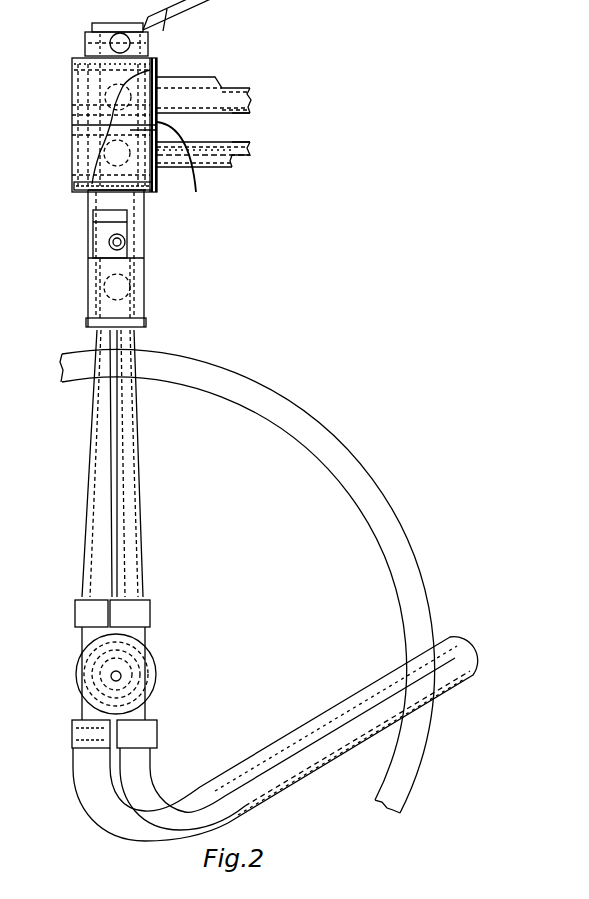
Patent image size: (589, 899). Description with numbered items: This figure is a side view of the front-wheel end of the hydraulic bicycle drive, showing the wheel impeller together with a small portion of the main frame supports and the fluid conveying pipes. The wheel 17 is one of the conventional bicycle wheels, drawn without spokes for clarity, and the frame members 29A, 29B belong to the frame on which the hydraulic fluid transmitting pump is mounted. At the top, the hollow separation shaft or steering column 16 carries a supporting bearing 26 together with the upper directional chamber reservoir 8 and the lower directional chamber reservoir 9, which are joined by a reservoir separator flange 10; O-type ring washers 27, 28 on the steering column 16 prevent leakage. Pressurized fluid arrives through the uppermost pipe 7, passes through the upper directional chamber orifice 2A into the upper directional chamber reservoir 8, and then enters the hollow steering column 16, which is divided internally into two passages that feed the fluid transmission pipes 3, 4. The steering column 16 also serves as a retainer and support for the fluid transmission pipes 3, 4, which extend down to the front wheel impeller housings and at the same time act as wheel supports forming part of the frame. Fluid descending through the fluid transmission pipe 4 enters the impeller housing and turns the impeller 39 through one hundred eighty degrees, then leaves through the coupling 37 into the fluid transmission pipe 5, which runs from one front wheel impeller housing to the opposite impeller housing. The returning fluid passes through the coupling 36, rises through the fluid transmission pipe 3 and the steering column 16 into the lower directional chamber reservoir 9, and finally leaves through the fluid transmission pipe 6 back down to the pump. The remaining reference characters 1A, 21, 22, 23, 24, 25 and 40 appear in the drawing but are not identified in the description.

The outer tube 1A is at (233, 148).
The upper directional chamber orifice 2A is at (248, 86).
The fluid transmission pipe 3 is at (86, 528).
The fluid transmission pipe 4 is at (144, 571).
The fluid transmission pipe 5 is at (308, 722).
The fluid transmission pipe 6 is at (248, 137).
The uppermost pipe 7 is at (252, 113).
The upper directional chamber reservoir 8 is at (76, 98).
The lower directional chamber reservoir 9 is at (80, 141).
The reservoir separator flange 10 is at (190, 166).
The steering column 16 is at (88, 228).
The wheel 17 is at (250, 378).
The handle rod 21 is at (125, 32).
The cap 22 is at (92, 40).
The side wall 23 is at (150, 58).
The top plate 24 is at (80, 63).
The bottom flange 25 is at (148, 198).
The supporting bearing 26 is at (78, 192).
The O-type ring washer 27 is at (82, 83).
The O-type ring washer 28 is at (157, 172).
The frame member 29A is at (207, 77).
The frame member 29B is at (223, 180).
The coupling 36 is at (72, 722).
The coupling 37 is at (158, 736).
The impeller 39 is at (82, 676).
The pivot 40 is at (120, 676).